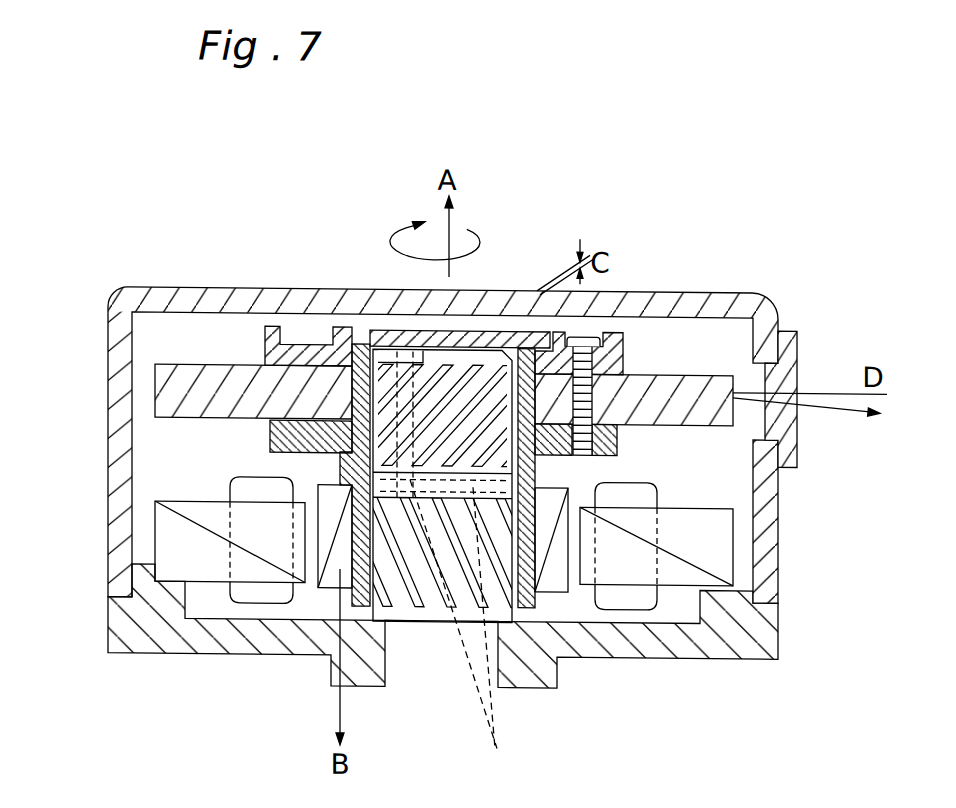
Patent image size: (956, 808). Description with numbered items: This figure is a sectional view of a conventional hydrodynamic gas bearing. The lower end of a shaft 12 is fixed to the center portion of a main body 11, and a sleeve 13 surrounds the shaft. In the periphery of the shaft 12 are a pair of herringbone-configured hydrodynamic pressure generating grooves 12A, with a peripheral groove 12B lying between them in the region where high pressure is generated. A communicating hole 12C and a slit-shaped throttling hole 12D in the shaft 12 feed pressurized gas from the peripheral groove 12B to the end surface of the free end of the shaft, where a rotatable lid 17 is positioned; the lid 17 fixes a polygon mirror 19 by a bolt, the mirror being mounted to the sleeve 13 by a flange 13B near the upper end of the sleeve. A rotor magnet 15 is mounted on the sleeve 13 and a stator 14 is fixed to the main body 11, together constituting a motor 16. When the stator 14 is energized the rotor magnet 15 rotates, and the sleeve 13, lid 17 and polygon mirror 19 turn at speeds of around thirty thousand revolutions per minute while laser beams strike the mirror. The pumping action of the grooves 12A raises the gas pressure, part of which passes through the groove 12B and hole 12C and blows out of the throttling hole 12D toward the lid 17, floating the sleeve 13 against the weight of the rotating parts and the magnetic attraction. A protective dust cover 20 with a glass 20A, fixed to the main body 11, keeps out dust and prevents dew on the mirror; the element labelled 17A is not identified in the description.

The main body 11 is at (117, 656).
The shaft 12 is at (415, 672).
The herringbone-configured hydrodynamic pressure generating grooves 12A is at (393, 537).
The peripheral groove 12B is at (510, 482).
The communicating hole 12C is at (473, 634).
The throttling hole 12D is at (395, 349).
The sleeve 13 is at (338, 380).
The flange 13B is at (610, 443).
The stator 14 is at (173, 534).
The rotor magnet 15 is at (335, 577).
The motor 16 is at (307, 553).
The lid 17 is at (340, 385).
The yoke top plate 17A is at (445, 335).
The polygon mirror 19 is at (655, 385).
The protective dust cover 20 is at (737, 303).
The glass 20A is at (793, 342).